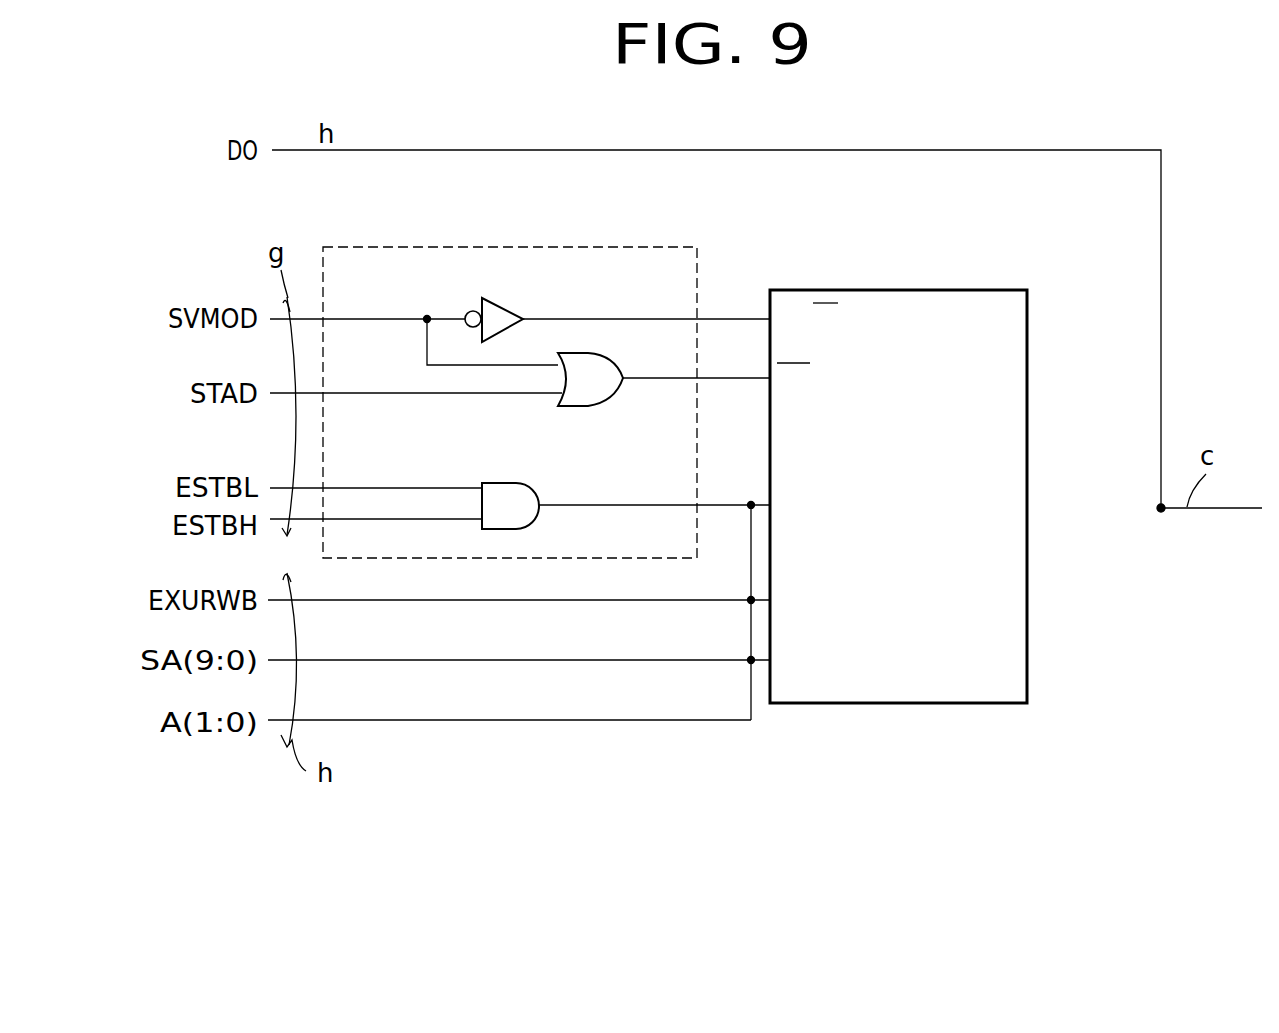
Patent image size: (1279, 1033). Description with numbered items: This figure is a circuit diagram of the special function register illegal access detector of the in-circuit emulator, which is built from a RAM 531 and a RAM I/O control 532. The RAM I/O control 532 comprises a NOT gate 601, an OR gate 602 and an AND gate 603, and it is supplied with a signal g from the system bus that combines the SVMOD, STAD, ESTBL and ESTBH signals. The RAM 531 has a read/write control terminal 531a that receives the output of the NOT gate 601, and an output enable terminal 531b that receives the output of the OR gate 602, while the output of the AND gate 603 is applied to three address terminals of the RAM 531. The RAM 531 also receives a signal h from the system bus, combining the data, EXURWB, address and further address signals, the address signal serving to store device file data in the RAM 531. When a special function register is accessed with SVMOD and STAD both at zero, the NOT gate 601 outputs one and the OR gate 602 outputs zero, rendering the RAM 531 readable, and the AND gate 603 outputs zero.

The RAM 531 is at (875, 289).
The read/write control terminal 531a is at (768, 312).
The output enable terminal 531b is at (770, 378).
The RAM I/O control 532 is at (385, 247).
The NOT gate 601 is at (508, 302).
The OR gate 602 is at (592, 408).
The AND gate 603 is at (510, 483).